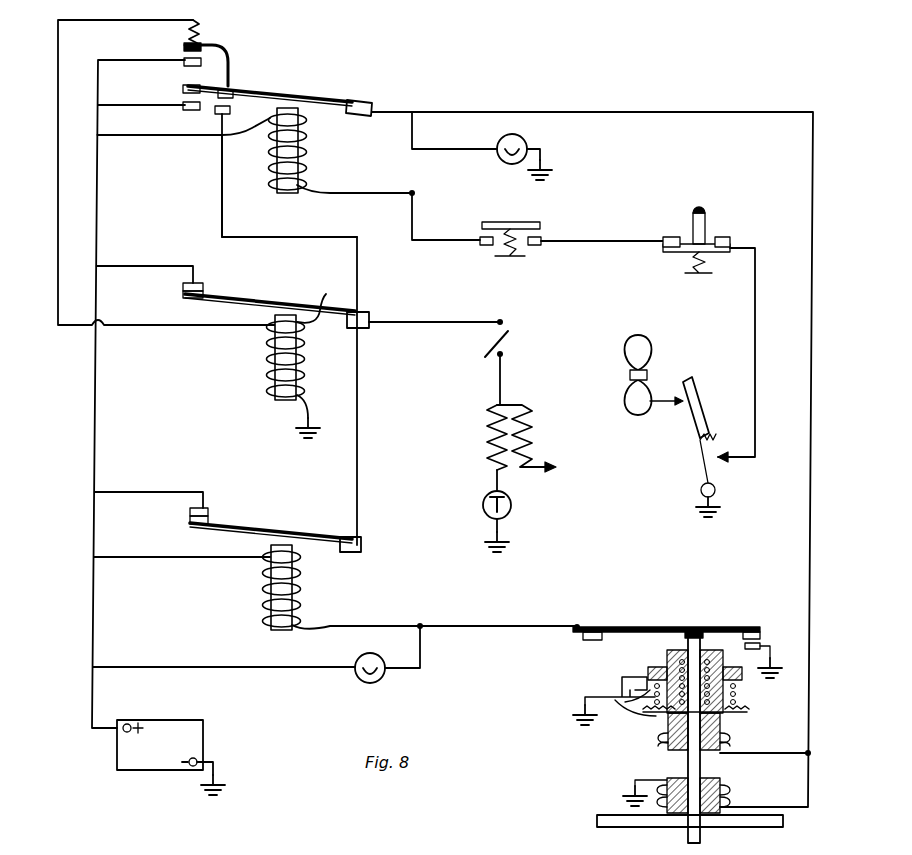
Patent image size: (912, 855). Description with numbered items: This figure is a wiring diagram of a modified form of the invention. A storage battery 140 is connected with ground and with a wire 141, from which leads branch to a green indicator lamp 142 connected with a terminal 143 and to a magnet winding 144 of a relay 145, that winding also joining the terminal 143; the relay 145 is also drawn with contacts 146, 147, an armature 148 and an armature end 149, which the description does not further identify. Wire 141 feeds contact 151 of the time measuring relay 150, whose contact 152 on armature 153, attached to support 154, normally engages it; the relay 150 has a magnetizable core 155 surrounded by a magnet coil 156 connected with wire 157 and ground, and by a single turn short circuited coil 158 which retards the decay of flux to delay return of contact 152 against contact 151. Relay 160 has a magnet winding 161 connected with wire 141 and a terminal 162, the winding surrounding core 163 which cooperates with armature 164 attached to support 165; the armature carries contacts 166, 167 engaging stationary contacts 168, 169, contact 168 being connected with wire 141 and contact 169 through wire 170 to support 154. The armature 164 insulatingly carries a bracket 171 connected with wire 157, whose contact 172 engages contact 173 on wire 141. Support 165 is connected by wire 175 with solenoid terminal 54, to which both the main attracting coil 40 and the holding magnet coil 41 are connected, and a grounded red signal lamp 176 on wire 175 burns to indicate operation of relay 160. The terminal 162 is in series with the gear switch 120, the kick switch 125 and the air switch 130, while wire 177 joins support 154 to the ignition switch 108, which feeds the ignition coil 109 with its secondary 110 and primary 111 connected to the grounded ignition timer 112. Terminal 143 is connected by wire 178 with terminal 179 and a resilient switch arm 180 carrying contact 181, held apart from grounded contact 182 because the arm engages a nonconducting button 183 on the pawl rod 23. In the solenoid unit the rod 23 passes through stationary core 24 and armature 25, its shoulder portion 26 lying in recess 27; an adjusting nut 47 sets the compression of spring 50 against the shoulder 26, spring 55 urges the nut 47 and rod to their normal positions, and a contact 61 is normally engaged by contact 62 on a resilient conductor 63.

The pawl rod 23 is at (686, 645).
The solenoid stationary core 24 is at (660, 806).
The solenoid armature 25 is at (662, 748).
The shoulder portion 26 is at (748, 713).
The recess 27 is at (702, 648).
The main attracting coil 40 is at (720, 735).
The holding magnet coil 41 is at (725, 789).
The adjusting nut 47 is at (742, 675).
The spring 50 is at (667, 660).
The solenoid terminal 54 is at (810, 752).
The spring 55 is at (735, 698).
The contact 61 is at (622, 674).
The contact 62 is at (625, 702).
The resilient conductor 63 is at (615, 700).
The ignition switch 108 is at (503, 350).
The ignition coil 109 is at (533, 427).
The secondary 110 is at (533, 433).
The primary 111 is at (487, 434).
The ignition timer 112 is at (483, 510).
The gear switch 120 is at (571, 228).
The kick switch 125 is at (709, 321).
The air switch 130 is at (673, 426).
The storage battery 140 is at (116, 754).
The wire 141 is at (98, 85).
The green indicator lamp 142 is at (360, 678).
The terminal 143 is at (421, 625).
The magnet winding 144 is at (270, 583).
The relay 145 is at (247, 489).
The contact 146 is at (189, 510).
The contact 147 is at (189, 522).
The armature 148 is at (288, 530).
The armature end 149 is at (362, 545).
The time measuring relay 150 is at (277, 391).
The contact 151 is at (181, 288).
The contact 152 is at (182, 296).
The armature 153 is at (266, 300).
The support 154 is at (366, 312).
The magnetizable core 155 is at (278, 402).
The magnet coil 156 is at (300, 355).
The wire 157 is at (57, 270).
The single turn short circuited coil 158 is at (326, 292).
The relay 160 is at (242, 64).
The magnet winding 161 is at (300, 152).
The terminal 162 is at (420, 182).
The core 163 is at (280, 193).
The armature 164 is at (316, 97).
The support 165 is at (366, 100).
The contact 166 is at (182, 88).
The contact 167 is at (232, 96).
The stationary contact 168 is at (182, 108).
The stationary contact 169 is at (217, 114).
The wire 170 is at (220, 188).
The bracket 171 is at (226, 38).
The contact 172 is at (183, 45).
The contact 173 is at (195, 66).
The wire 175 is at (628, 112).
The red signal lamp 176 is at (500, 158).
The wire 177 is at (455, 312).
The wire 178 is at (503, 628).
The terminal 179 is at (575, 625).
The resilient switch arm 180 is at (665, 627).
The contact 181 is at (765, 628).
The grounded contact 182 is at (782, 640).
The nonconducting button 183 is at (718, 630).